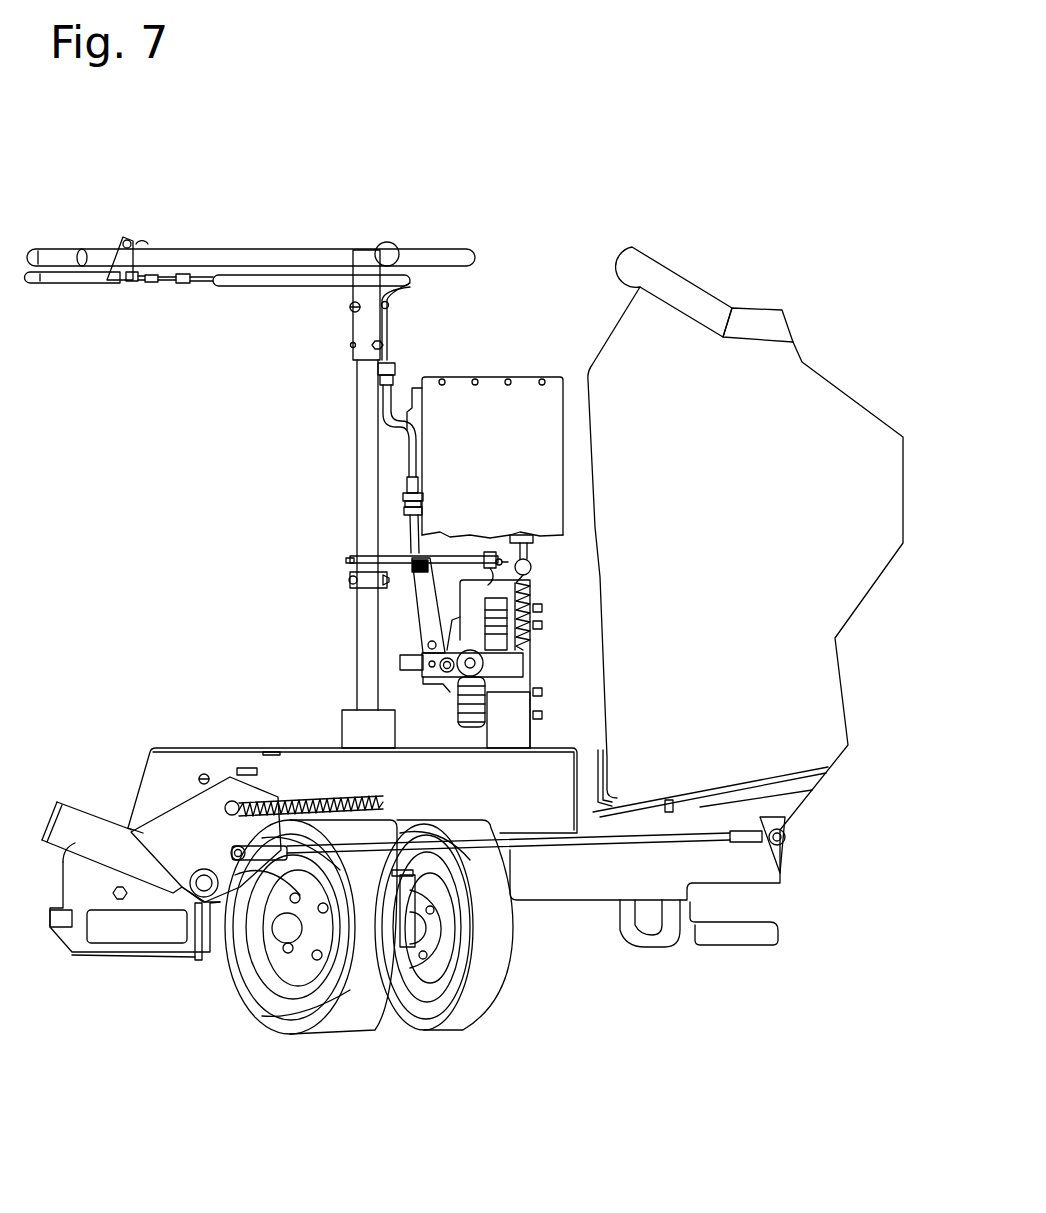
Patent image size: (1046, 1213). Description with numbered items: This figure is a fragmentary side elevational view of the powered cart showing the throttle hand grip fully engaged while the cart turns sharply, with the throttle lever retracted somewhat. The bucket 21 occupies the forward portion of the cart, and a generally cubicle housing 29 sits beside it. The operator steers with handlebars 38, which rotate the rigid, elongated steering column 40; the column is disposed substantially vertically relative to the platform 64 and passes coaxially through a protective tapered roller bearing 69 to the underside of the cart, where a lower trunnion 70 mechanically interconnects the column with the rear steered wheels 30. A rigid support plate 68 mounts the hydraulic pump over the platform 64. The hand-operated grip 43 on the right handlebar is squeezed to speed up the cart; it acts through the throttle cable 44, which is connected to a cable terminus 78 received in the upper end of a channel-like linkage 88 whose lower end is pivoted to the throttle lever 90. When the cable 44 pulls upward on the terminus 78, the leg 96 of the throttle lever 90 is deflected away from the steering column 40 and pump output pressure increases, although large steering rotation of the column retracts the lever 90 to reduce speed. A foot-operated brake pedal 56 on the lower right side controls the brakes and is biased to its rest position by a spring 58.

The bucket 21 is at (832, 415).
The housing 29 is at (490, 390).
The steered wheels 30 is at (517, 978).
The handlebars 38 is at (418, 238).
The steering column 40 is at (362, 455).
The hand-operated grip 43 is at (70, 293).
The throttle cable 44 is at (385, 400).
The brake pedal 56 is at (100, 830).
The spring 58 is at (340, 802).
The platform 64 is at (209, 748).
The support plate 68 is at (512, 740).
The tapered roller bearing 69 is at (348, 722).
The lower trunnion 70 is at (405, 928).
The cable terminus 78 is at (418, 545).
The linkage 88 is at (413, 605).
The throttle lever 90 is at (530, 660).
The leg 96 is at (488, 583).